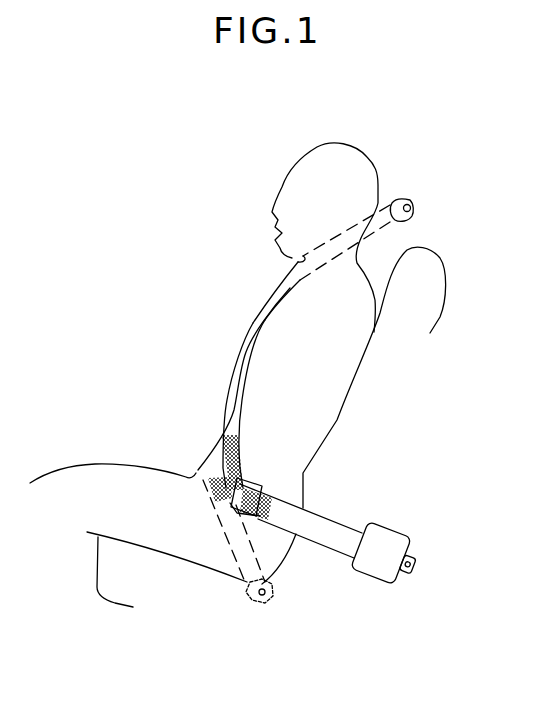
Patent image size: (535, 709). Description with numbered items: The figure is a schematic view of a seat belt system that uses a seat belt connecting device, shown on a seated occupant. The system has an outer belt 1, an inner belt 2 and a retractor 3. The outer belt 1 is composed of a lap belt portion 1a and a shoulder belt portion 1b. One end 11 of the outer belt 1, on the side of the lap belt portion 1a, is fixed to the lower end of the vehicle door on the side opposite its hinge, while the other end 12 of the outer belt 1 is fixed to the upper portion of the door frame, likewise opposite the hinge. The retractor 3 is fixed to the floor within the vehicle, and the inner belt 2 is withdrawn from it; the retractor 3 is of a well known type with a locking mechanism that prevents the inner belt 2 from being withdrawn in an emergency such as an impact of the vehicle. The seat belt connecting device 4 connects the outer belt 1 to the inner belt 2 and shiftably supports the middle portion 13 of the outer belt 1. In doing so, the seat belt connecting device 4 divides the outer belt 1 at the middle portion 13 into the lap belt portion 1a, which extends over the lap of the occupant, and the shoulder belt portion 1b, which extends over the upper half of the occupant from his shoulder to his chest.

The outer belt 1 is at (226, 399).
The lap belt portion 1a is at (206, 476).
The shoulder belt portion 1b is at (257, 316).
The inner belt 2 is at (312, 533).
The retractor 3 is at (387, 538).
The seat belt connecting device 4 is at (262, 480).
The one end of the outer belt 11 is at (253, 603).
The other end of the outer belt 12 is at (412, 190).
The middle portion of the outer belt 13 is at (283, 501).